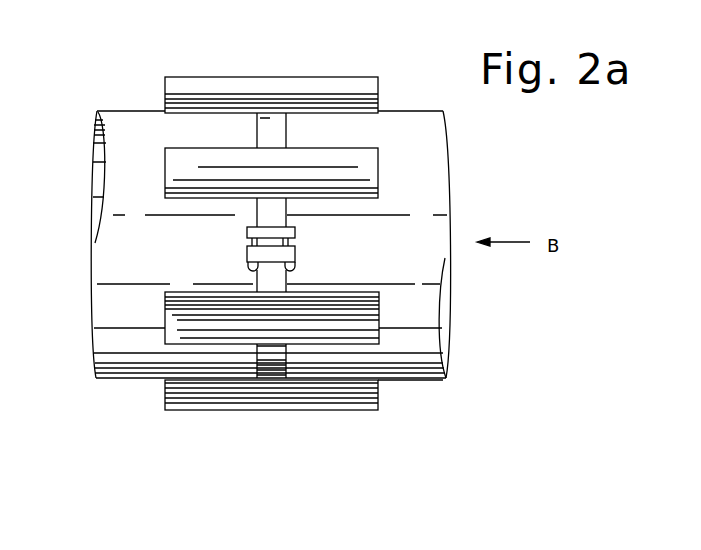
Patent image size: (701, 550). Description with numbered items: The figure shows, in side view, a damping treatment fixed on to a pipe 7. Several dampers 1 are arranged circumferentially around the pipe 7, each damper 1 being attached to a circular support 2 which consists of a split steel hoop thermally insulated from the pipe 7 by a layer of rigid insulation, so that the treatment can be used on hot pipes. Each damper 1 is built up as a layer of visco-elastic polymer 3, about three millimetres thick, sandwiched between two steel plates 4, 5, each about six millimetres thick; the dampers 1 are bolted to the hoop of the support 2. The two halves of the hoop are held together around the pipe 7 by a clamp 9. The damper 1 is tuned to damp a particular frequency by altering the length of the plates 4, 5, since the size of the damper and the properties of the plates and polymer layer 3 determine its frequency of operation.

The damper 1 is at (238, 82).
The circular support 2 is at (276, 133).
The layer of visco-elastic polymer 3 is at (165, 382).
The steel plate 4 is at (185, 405).
The steel plate 5 is at (377, 379).
The pipe 7 is at (102, 337).
The clamp 9 is at (247, 252).